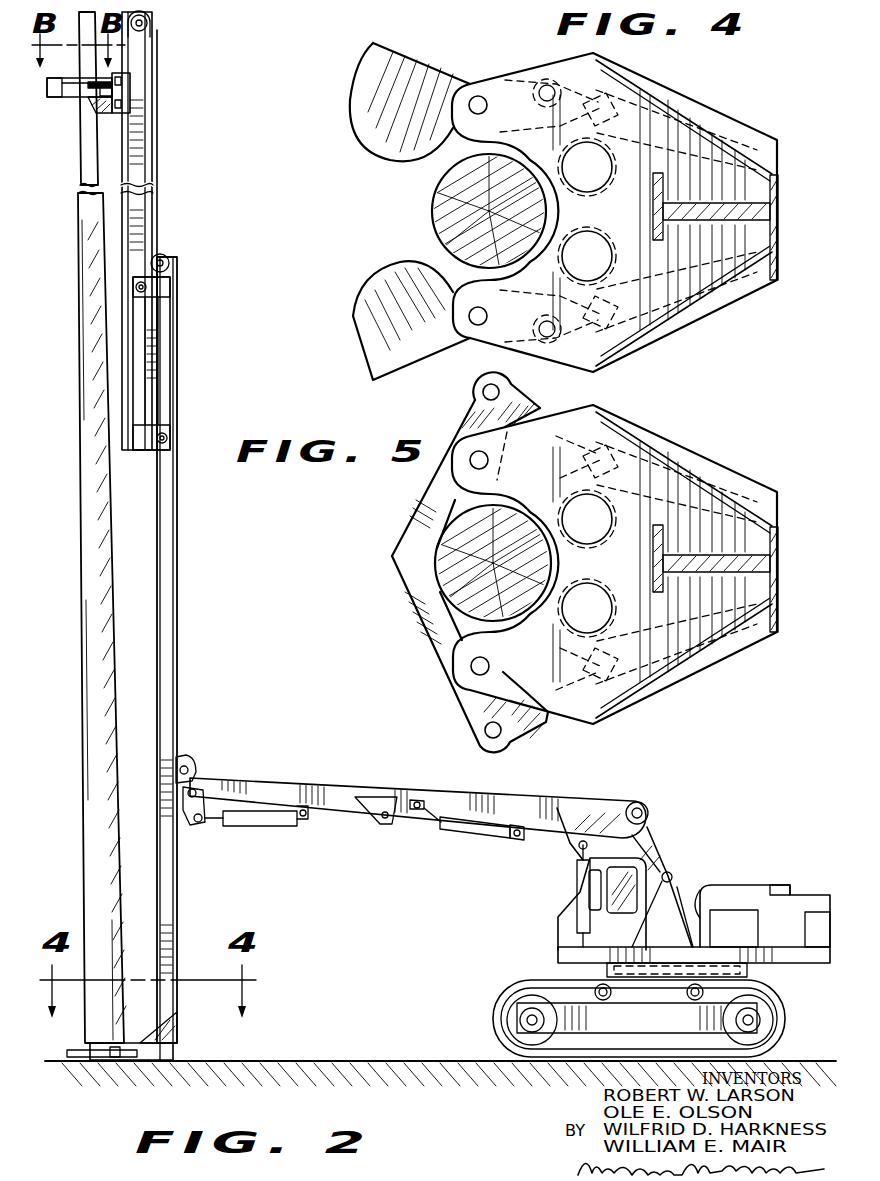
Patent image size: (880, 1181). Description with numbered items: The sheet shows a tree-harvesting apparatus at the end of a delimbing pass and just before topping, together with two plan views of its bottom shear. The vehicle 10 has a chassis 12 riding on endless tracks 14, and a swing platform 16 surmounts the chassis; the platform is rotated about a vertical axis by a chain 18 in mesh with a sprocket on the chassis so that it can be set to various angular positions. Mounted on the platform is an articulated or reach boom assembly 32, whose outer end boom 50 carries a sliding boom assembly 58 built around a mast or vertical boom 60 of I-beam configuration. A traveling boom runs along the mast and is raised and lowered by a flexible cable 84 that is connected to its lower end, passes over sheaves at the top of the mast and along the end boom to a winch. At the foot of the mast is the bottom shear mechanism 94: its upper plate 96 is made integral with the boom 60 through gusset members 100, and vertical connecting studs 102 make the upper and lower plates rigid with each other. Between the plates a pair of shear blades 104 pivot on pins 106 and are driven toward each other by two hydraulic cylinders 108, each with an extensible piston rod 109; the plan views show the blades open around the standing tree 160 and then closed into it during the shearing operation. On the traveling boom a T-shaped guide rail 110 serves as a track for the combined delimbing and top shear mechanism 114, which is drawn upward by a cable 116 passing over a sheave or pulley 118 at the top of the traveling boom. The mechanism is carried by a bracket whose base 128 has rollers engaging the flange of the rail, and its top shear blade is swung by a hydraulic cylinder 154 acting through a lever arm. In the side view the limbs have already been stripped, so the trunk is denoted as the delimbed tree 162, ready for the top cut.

In FIG. 2, the vehicle 10 is at (695, 829).
In FIG. 2, the chassis 12 is at (680, 1018).
In FIG. 2, the endless tracks 14 is at (502, 1007).
In FIG. 2, the swing platform 16 is at (557, 960).
In FIG. 2, the chain 18 is at (607, 975).
In FIG. 2, the articulated or reach boom assembly 32 is at (534, 788).
In FIG. 2, the end boom 50 is at (318, 797).
In FIG. 2, the sliding boom assembly 58 is at (160, 67).
In FIG. 2, the mast or vertical boom 60 is at (167, 900).
In FIG. 4, the mast or vertical boom 60 is at (760, 210).
In FIG. 5, the mast or vertical boom 60 is at (762, 560).
In FIG. 2, the flexible cable 84 is at (178, 713).
In FIG. 2, the bottom shear mechanism 94 is at (190, 1050).
In FIG. 5, the bottom shear mechanism 94 is at (400, 613).
In FIG. 4, the upper plate 96 is at (595, 172).
In FIG. 5, the upper plate 96 is at (614, 564).
In FIG. 4, the gusset members 100 is at (650, 90).
In FIG. 5, the gusset members 100 is at (660, 440).
In FIG. 4, the vertical connecting pins or studs 102 is at (587, 247).
In FIG. 5, the vertical connecting pins or studs 102 is at (593, 533).
In FIG. 4, the shear blades 104 is at (373, 45).
In FIG. 5, the shear blades 104 is at (397, 527).
In FIG. 4, the pins 106 is at (480, 103).
In FIG. 5, the pins 106 is at (460, 457).
In FIG. 4, the hydraulic cylinders 108 is at (657, 113).
In FIG. 5, the hydraulic cylinders 108 is at (740, 487).
In FIG. 5, the extensible piston rod 109 is at (515, 385).
In FIG. 2, the guide rail 110 is at (128, 343).
In FIG. 2, the combined delimbing and top shear mechanism 114 is at (64, 106).
In FIG. 2, the cable 116 is at (157, 147).
In FIG. 2, the sheave or pulley 118 is at (150, 22).
In FIG. 2, the base 128 is at (127, 97).
In FIG. 2, the hydraulic cylinder 154 is at (90, 112).
In FIG. 4, the standing tree 160 is at (437, 212).
In FIG. 5, the standing tree 160 is at (420, 618).
In FIG. 2, the delimbed tree 162 is at (98, 758).